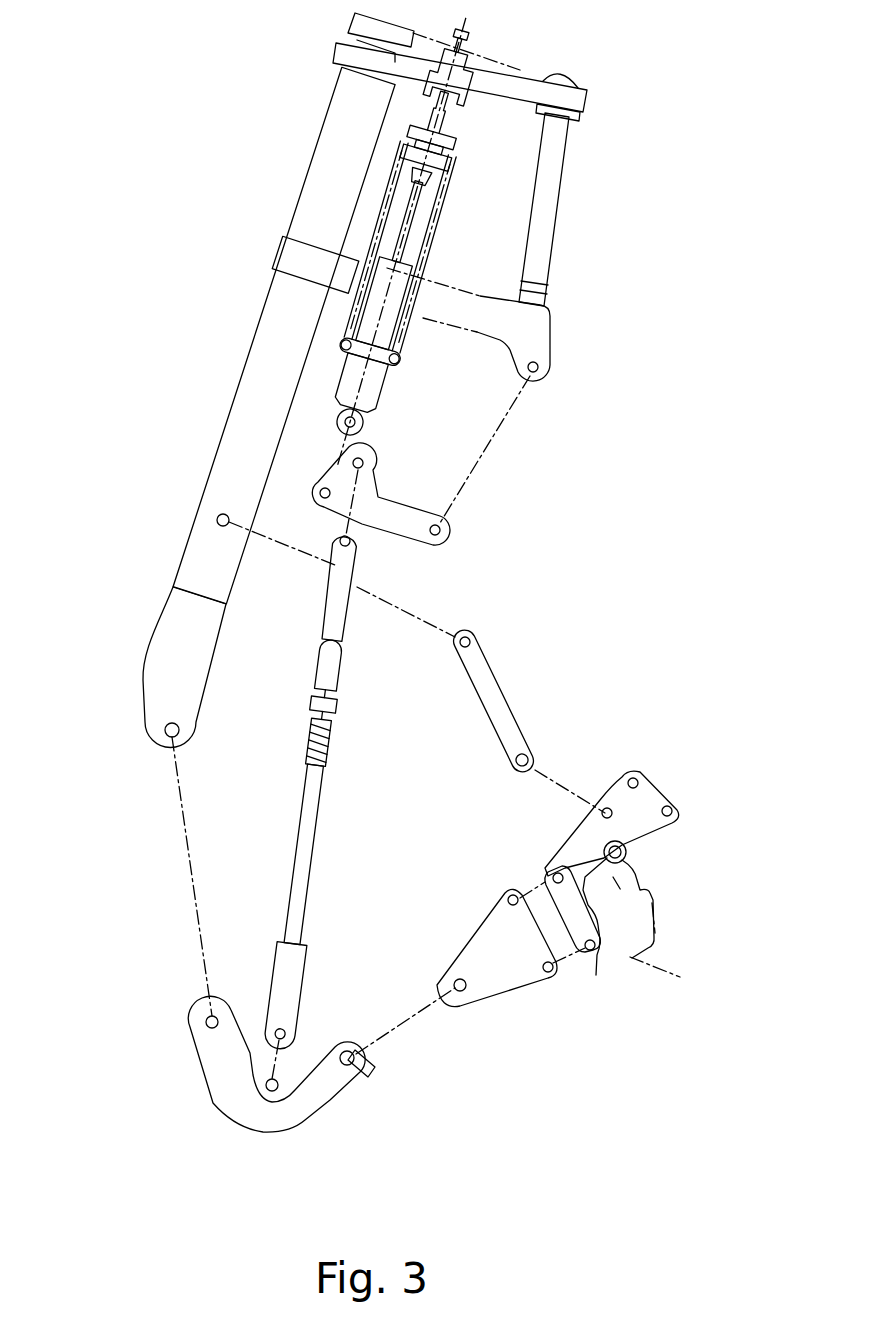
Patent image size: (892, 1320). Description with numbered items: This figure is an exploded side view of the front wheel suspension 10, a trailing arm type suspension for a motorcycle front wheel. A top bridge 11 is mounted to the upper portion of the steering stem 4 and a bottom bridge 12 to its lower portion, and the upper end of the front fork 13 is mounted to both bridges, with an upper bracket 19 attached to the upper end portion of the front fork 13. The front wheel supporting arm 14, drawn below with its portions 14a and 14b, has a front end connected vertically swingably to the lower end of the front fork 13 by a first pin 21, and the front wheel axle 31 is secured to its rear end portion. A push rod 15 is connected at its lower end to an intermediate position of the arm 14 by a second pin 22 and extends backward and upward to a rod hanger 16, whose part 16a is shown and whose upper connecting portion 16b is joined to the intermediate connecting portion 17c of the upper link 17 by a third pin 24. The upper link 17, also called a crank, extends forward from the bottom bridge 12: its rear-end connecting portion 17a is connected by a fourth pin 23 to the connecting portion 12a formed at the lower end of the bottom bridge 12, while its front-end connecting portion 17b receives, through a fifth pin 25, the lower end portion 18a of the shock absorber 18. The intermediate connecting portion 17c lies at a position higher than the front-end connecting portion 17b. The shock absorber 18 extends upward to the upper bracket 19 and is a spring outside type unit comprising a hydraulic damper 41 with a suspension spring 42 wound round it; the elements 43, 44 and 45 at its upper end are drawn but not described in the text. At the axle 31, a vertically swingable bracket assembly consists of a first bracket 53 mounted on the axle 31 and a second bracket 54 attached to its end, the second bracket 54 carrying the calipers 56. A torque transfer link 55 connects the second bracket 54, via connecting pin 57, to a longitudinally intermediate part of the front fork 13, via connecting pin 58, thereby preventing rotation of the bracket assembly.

The steering stem 4 is at (553, 205).
The front wheel suspension 10 is at (170, 131).
The top bridge 11 is at (578, 100).
The bottom bridge 12 is at (537, 327).
The connecting portion 12a is at (543, 378).
The front fork 13 is at (305, 190).
The front wheel supporting arm 14 is at (220, 1100).
The axle bracket 14a is at (362, 1070).
The pivot of bottom link 14b is at (347, 1050).
The push rod 15 is at (305, 865).
The rod hanger 16 is at (346, 618).
The adjuster of link 16a is at (325, 670).
The upper connecting portion 16b is at (338, 560).
The upper link 17 is at (396, 533).
The rear-end connecting portion 17a is at (448, 530).
The front-end connecting portion 17b is at (318, 487).
The intermediate connecting portion 17c is at (370, 467).
The shock absorber 18 is at (386, 383).
The lower end portion 18a is at (365, 425).
The upper bracket 19 is at (338, 52).
The first pin 21 is at (187, 860).
The second pin 22 is at (295, 1083).
The fourth pin 23 is at (485, 455).
The third pin 24 is at (345, 530).
The fifth pin 25 is at (312, 448).
The front wheel axle 31 is at (430, 1012).
The hydraulic damper 41 is at (385, 328).
The suspension spring 42 is at (438, 238).
The bolt 43 is at (462, 55).
The bracket 44 is at (458, 74).
The upper eye 45 is at (440, 122).
The first bracket 53 is at (505, 975).
The second bracket 54 is at (592, 955).
The torque transfer link 55 is at (490, 690).
The calipers 56 is at (650, 965).
The connecting pin 57 is at (563, 782).
The connecting pin 58 is at (440, 622).